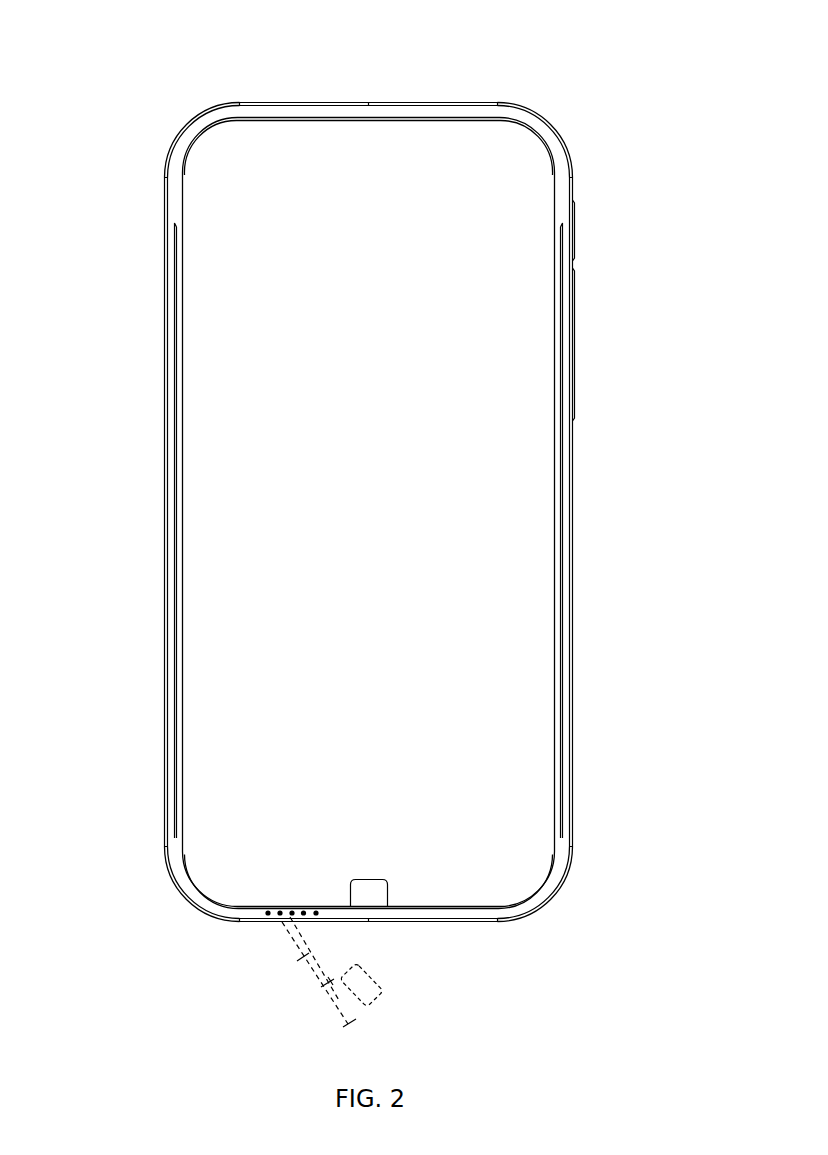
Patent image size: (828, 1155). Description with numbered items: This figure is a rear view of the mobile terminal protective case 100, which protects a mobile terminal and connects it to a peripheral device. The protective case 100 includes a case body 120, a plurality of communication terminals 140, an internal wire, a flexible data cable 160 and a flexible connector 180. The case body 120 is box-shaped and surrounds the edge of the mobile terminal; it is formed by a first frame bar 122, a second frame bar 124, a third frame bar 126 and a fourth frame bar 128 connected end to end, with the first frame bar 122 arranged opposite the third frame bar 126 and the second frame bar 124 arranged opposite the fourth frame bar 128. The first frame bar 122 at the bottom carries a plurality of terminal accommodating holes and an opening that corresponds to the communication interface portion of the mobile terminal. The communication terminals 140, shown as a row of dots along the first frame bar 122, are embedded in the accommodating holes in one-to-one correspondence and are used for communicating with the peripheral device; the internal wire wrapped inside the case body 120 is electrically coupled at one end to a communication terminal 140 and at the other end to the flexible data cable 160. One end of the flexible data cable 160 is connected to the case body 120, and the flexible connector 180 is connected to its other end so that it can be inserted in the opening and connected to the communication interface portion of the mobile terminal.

The mobile terminal protective case 100 is at (83, 36).
The case body 120 is at (588, 148).
The first frame bar 122 is at (474, 912).
The second frame bar 124 is at (562, 461).
The third frame bar 126 is at (304, 114).
The fourth frame bar 128 is at (174, 480).
The communication terminal 140 is at (266, 913).
The flexible data cable 160 is at (312, 969).
The flexible connector 180 is at (368, 896).